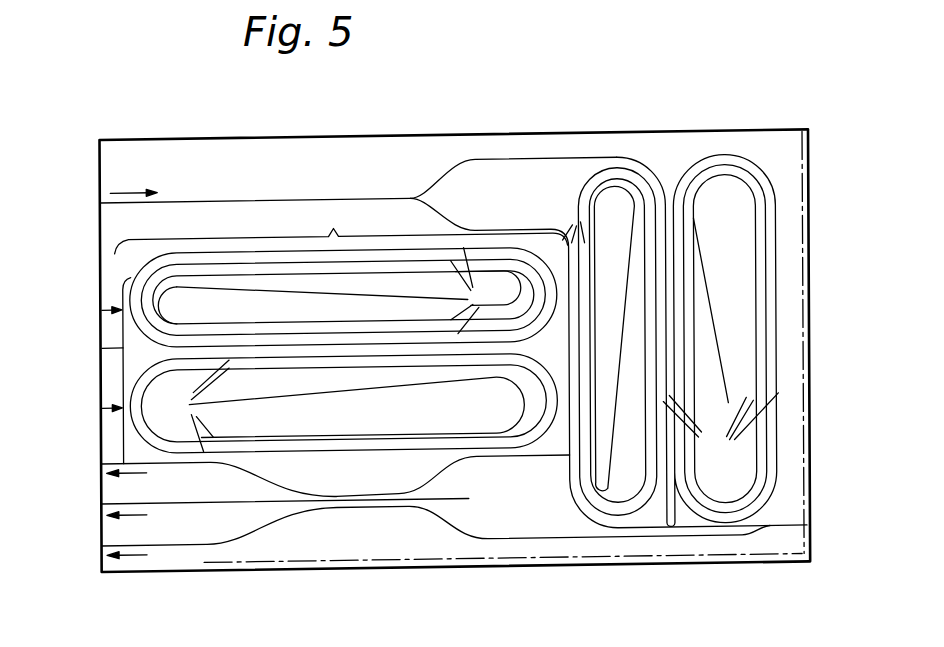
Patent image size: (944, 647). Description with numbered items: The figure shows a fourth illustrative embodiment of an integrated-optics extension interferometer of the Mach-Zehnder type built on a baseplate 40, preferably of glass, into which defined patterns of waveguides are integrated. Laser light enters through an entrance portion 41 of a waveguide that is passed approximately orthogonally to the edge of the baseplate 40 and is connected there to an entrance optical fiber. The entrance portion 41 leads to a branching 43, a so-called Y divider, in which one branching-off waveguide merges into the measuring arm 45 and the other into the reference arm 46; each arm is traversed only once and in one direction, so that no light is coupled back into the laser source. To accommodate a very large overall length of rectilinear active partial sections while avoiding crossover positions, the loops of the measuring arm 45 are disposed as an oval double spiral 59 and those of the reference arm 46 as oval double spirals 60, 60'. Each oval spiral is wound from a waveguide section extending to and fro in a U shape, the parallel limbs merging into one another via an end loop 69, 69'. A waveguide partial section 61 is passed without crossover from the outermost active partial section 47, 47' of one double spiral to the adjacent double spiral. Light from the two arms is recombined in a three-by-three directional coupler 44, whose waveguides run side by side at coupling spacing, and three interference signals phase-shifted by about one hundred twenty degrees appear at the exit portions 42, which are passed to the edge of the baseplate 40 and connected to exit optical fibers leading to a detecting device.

The baseplate 40 is at (293, 166).
The entrance portion 41 is at (222, 200).
The exit portions 42 is at (208, 466).
The branching 43 is at (410, 200).
The 3×3 directional coupler 44 is at (353, 520).
The measuring arm 45 is at (792, 577).
The reference arm 46 is at (341, 329).
The outermost active partial section 47 is at (654, 271).
The outermost active partial section 47' is at (333, 349).
The oval double spiral 59 is at (547, 506).
The oval double spiral 60 is at (294, 298).
The oval double spiral 60' is at (294, 404).
The waveguide partial section 61 is at (101, 349).
The end loop 69 is at (723, 325).
The end loop 69' is at (278, 324).